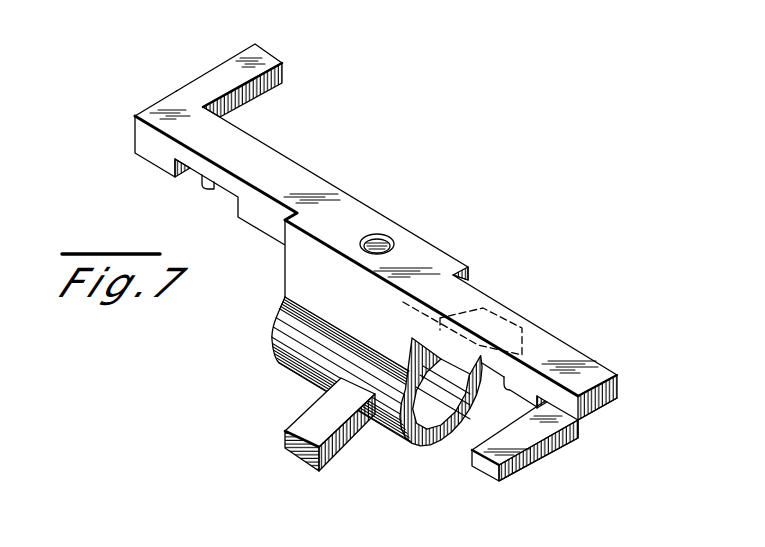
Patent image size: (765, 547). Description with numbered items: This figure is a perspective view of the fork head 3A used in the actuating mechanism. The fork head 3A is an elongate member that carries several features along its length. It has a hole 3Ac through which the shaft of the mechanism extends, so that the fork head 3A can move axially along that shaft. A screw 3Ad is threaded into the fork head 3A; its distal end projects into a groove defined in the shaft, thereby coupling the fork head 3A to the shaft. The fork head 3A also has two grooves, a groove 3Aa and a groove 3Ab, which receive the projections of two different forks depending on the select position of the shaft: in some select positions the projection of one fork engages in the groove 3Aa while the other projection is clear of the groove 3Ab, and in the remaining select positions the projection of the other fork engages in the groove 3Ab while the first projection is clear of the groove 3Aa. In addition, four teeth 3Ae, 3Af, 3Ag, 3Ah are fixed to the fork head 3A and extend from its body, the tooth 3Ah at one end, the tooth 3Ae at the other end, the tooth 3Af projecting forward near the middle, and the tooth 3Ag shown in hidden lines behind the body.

The fork head 3A is at (510, 220).
The groove 3Aa is at (213, 184).
The groove 3Ab is at (506, 379).
The hole 3Ac is at (433, 447).
The screw 3Ad is at (383, 236).
The tooth 3Ae is at (550, 452).
The tooth 3Af is at (300, 428).
The tooth 3Ag is at (493, 314).
The tooth 3Ah is at (215, 76).